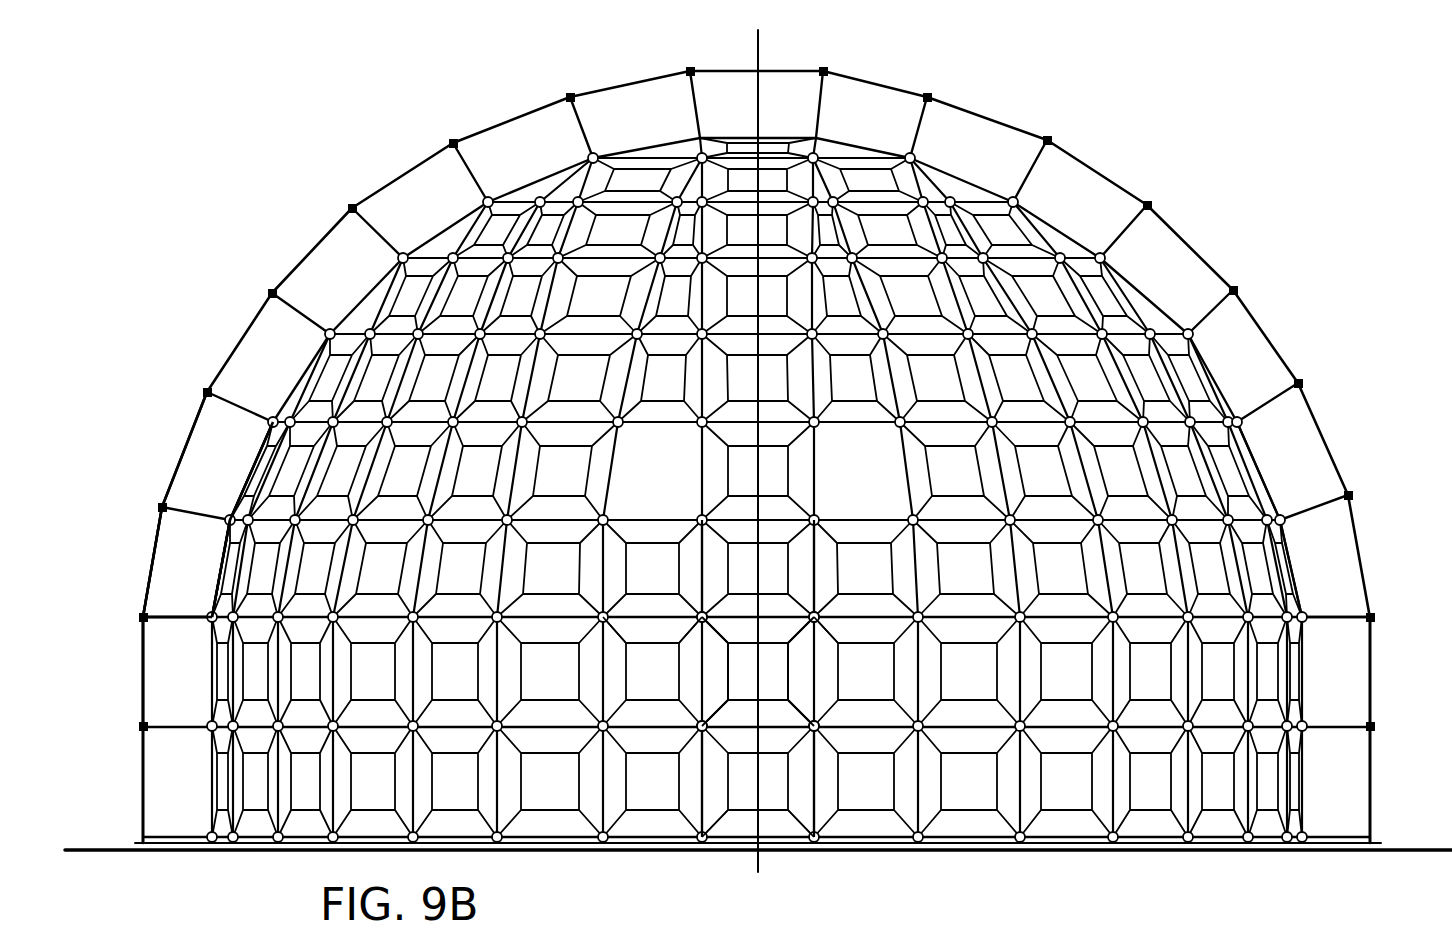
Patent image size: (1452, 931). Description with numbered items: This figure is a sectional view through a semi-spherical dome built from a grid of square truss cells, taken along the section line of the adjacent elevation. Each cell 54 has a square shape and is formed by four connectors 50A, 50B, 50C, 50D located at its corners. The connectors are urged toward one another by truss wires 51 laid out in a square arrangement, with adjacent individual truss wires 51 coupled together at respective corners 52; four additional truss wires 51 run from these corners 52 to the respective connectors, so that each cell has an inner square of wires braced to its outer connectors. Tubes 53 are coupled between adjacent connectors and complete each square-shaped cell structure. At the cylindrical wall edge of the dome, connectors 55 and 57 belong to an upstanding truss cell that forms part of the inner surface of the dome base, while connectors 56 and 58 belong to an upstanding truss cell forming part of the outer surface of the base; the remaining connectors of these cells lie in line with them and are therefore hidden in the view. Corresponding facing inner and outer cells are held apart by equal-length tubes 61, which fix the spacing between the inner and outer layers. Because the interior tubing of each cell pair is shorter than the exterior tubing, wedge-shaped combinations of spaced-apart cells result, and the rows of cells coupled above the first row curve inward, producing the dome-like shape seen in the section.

The connector 50A is at (702, 617).
The connector 50B is at (818, 617).
The connector 50C is at (820, 750).
The connector 50D is at (693, 737).
The truss wire 51 is at (735, 648).
The corner 52 is at (732, 697).
The tube 53 is at (662, 618).
The cell 54 is at (866, 583).
The connector 55 is at (157, 504).
The connector 56 is at (123, 710).
The connector 57 is at (212, 617).
The connector 58 is at (143, 617).
The tube 61 is at (196, 505).